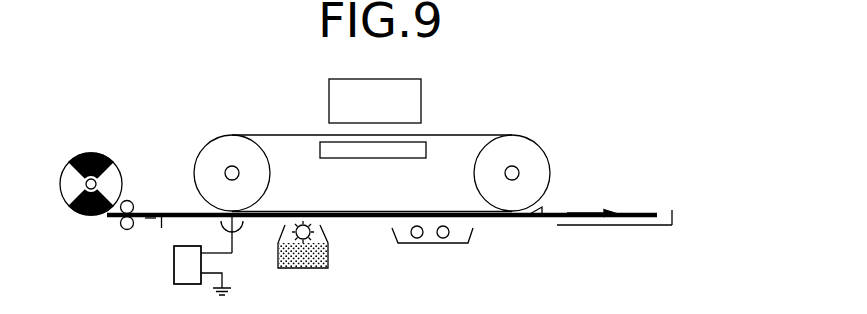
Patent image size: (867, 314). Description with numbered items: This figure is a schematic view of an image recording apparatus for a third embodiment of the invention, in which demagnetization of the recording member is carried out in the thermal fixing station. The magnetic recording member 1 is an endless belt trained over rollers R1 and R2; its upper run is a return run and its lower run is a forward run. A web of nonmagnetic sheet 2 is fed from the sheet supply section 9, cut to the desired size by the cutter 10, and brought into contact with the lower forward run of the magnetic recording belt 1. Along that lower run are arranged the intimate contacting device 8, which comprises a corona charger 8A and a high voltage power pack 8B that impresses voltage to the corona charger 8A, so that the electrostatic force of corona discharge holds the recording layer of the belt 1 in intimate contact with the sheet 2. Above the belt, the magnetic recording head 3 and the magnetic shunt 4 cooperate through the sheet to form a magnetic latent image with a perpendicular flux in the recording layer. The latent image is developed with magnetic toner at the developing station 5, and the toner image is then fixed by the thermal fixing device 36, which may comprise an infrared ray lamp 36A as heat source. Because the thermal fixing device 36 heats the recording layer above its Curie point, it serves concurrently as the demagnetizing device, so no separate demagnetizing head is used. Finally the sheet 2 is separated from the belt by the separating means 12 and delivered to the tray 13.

The magnetic recording member 1 is at (475, 135).
The nonmagnetic sheet 2 is at (507, 219).
The magnetic recording head 3 is at (421, 95).
The magnetic shunt 4 is at (362, 158).
The developing station 5 is at (329, 248).
The intimate contacting device 8 is at (166, 272).
The corona charger 8A is at (243, 225).
The high voltage power pack 8B is at (173, 255).
The sheet supply section 9 is at (62, 191).
The cutter 10 is at (160, 210).
The separating means 12 is at (545, 208).
The tray 13 is at (638, 227).
The thermal fixing device 36 is at (407, 252).
The infrared ray lamp 36A is at (443, 238).
The roller R1 is at (222, 140).
The roller R2 is at (535, 155).